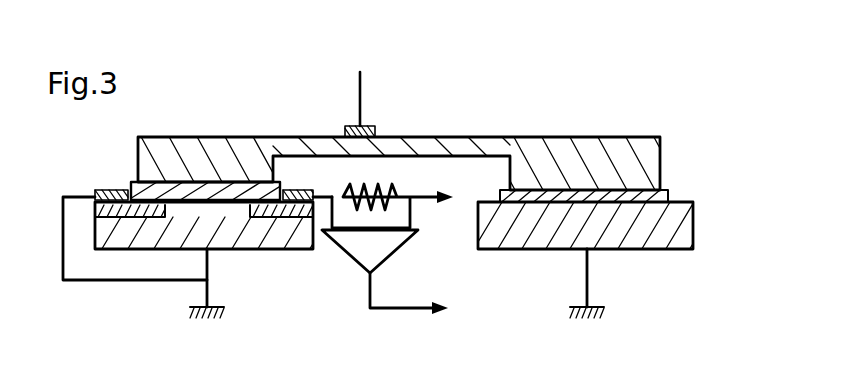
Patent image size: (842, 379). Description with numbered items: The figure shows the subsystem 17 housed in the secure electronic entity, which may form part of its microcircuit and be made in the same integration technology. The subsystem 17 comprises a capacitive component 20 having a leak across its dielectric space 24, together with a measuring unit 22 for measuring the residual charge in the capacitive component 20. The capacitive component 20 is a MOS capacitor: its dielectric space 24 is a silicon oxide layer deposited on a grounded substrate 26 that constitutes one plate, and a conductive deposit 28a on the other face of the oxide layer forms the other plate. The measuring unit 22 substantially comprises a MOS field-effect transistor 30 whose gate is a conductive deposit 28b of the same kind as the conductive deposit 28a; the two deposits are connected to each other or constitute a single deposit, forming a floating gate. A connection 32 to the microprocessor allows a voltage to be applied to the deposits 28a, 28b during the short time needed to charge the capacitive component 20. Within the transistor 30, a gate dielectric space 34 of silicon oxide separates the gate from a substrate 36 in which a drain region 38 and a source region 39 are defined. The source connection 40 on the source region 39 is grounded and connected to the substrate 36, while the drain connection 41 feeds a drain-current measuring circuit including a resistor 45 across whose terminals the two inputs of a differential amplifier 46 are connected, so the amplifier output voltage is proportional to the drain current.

The subsystem 17 is at (520, 113).
The capacitive component 20 is at (676, 183).
The measuring unit 22 is at (322, 273).
The dielectric space 24 is at (590, 186).
The substrate 26 is at (609, 228).
The conductive deposit 28a is at (581, 151).
The conductive deposit 28b is at (221, 150).
The field-effect transistor 30 is at (131, 173).
The connection 32 is at (366, 126).
The gate dielectric space 34 is at (196, 178).
The substrate 36 is at (218, 250).
The drain region 38 is at (263, 247).
The source region 39 is at (120, 248).
The source connection 40 is at (107, 188).
The drain connection 41 is at (293, 170).
The resistor 45 is at (377, 188).
The differential amplifier 46 is at (380, 245).